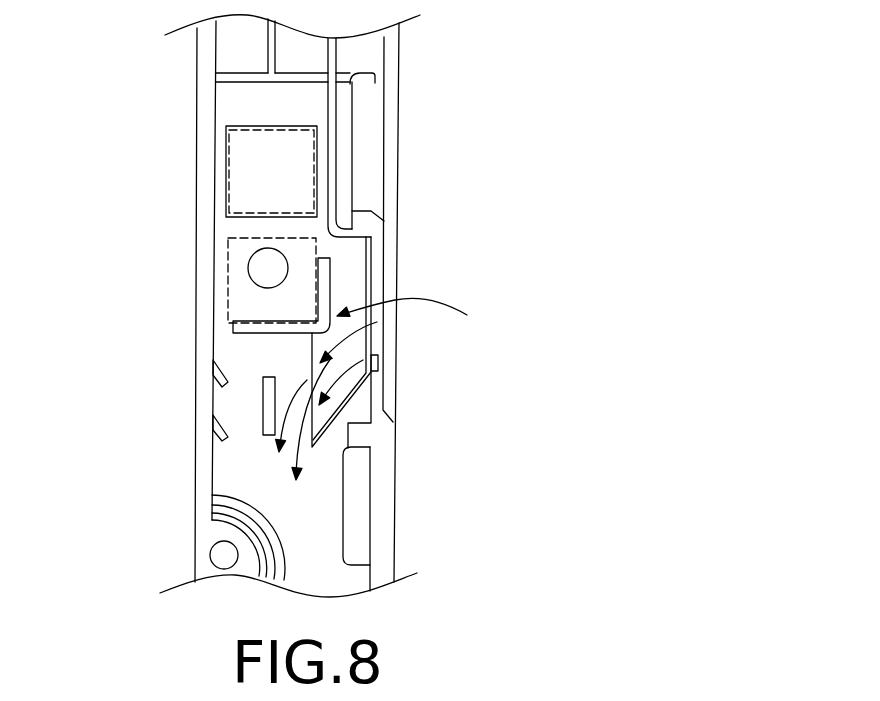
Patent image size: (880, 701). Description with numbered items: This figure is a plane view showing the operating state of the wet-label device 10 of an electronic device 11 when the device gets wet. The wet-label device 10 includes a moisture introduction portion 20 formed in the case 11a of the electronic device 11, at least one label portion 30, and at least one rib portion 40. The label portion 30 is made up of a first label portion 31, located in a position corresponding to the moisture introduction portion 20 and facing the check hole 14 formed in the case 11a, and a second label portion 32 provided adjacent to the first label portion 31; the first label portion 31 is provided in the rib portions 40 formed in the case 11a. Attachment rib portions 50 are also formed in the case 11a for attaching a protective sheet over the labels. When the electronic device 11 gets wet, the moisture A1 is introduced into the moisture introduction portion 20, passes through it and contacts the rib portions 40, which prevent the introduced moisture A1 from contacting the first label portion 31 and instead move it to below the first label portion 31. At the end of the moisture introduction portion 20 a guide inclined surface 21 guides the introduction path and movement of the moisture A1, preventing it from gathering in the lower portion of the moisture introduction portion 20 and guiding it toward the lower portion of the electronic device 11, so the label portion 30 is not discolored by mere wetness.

The wet-label device 10 is at (464, 68).
The electronic device 11 is at (412, 128).
The case 11a is at (384, 168).
The check hole 14 is at (270, 263).
The moisture introduction portion 20 is at (371, 268).
The guide inclined surface 21 is at (378, 363).
The label portion 30 is at (85, 165).
The first label portion 31 is at (228, 278).
The second label portion 32 is at (228, 174).
The rib portion 40 is at (325, 293).
The attachment rib portion 50 is at (267, 410).
The moisture A1 is at (408, 342).